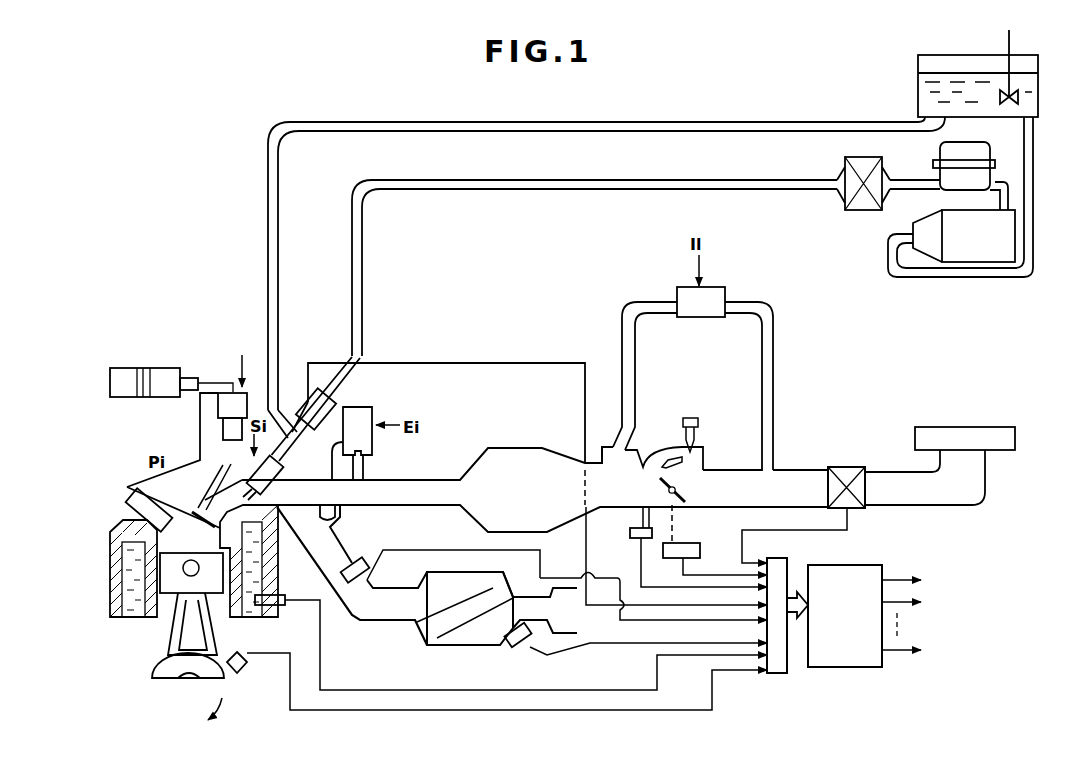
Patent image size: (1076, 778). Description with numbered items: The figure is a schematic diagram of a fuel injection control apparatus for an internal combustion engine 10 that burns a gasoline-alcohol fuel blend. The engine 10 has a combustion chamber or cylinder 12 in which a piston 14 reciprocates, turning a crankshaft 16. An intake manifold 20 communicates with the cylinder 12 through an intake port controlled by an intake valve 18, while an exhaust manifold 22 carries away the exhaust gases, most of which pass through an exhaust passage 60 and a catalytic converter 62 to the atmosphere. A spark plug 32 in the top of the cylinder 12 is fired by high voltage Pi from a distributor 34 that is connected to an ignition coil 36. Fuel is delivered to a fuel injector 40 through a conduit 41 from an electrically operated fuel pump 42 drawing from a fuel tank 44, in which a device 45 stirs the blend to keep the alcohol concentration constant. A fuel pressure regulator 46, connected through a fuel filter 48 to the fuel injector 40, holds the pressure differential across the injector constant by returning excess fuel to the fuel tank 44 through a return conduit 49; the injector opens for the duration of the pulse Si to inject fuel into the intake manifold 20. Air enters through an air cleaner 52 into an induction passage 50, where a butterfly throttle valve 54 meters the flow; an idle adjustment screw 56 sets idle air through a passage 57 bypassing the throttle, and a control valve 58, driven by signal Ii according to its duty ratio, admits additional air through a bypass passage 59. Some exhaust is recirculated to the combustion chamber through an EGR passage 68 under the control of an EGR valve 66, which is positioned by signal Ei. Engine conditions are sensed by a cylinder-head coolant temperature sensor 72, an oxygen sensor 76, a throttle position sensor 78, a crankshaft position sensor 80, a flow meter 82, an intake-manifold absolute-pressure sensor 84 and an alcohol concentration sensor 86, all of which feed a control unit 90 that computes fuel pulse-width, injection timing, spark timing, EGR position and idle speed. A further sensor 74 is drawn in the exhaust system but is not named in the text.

The internal combustion engine 10 is at (108, 595).
The combustion chamber or cylinder 12 is at (113, 555).
The piston 14 is at (177, 577).
The crankshaft 16 is at (213, 636).
The intake valve 18 is at (197, 512).
The intake manifold 20 is at (303, 503).
The exhaust manifold 22 is at (345, 545).
The spark plug 32 is at (131, 509).
The distributor 34 is at (218, 418).
The ignition coil 36 is at (131, 367).
The fuel injector 40 is at (271, 472).
The conduit 41 is at (364, 283).
The fuel pump 42 is at (980, 262).
The fuel tank 44 is at (970, 55).
The stirring device 45 is at (1013, 42).
The fuel pressure regulator 46 is at (987, 156).
The fuel filter 48 is at (858, 212).
The return conduit 49 is at (267, 162).
The induction passage 50 is at (788, 470).
The air cleaner 52 is at (1016, 440).
The butterfly throttle valve 54 is at (686, 491).
The idle adjustment screw 56 is at (698, 430).
The bypass passage 57 is at (706, 463).
The control valve 58 is at (703, 318).
The bypass passage 59 is at (774, 386).
The exhaust passage 60 is at (397, 624).
The catalytic converter 62 is at (450, 620).
The EGR valve 66 is at (373, 446).
The EGR passage 68 is at (343, 516).
The cylinder-head coolant temperature sensor 72 is at (284, 606).
The oxygen sensor 74 is at (522, 647).
The oxygen sensor 76 is at (353, 582).
The throttle position sensor 78 is at (699, 551).
The crankshaft position sensor 80 is at (243, 672).
The flow meter 82 is at (848, 466).
The intake-manifold absolute-pressure sensor 84 is at (630, 534).
The alcohol concentration sensor 86 is at (339, 398).
The control unit 90 is at (845, 668).